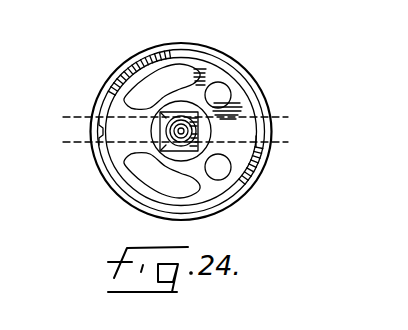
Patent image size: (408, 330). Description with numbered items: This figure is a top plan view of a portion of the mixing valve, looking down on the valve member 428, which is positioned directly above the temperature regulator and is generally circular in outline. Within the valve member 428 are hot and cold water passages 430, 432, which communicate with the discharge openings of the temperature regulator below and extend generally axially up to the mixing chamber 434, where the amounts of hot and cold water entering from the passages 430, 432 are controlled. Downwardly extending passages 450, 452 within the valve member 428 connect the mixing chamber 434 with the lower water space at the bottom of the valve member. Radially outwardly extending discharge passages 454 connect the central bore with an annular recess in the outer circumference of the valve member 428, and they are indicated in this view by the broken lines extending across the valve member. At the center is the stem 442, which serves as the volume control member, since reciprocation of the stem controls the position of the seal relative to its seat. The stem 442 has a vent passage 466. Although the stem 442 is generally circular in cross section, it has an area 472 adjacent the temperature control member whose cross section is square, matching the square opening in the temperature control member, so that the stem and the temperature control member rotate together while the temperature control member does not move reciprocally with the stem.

The valve member 428 is at (112, 77).
The hot water passage 430 is at (232, 89).
The cold water passage 432 is at (224, 165).
The mixing chamber 434 is at (121, 146).
The stem 442 is at (182, 128).
The downwardly extending passage 450 is at (157, 76).
The downwardly extending passage 452 is at (167, 186).
The discharge passages 454 is at (174, 126).
The vent passage 466 is at (192, 117).
The square cross-section area 472 is at (197, 129).